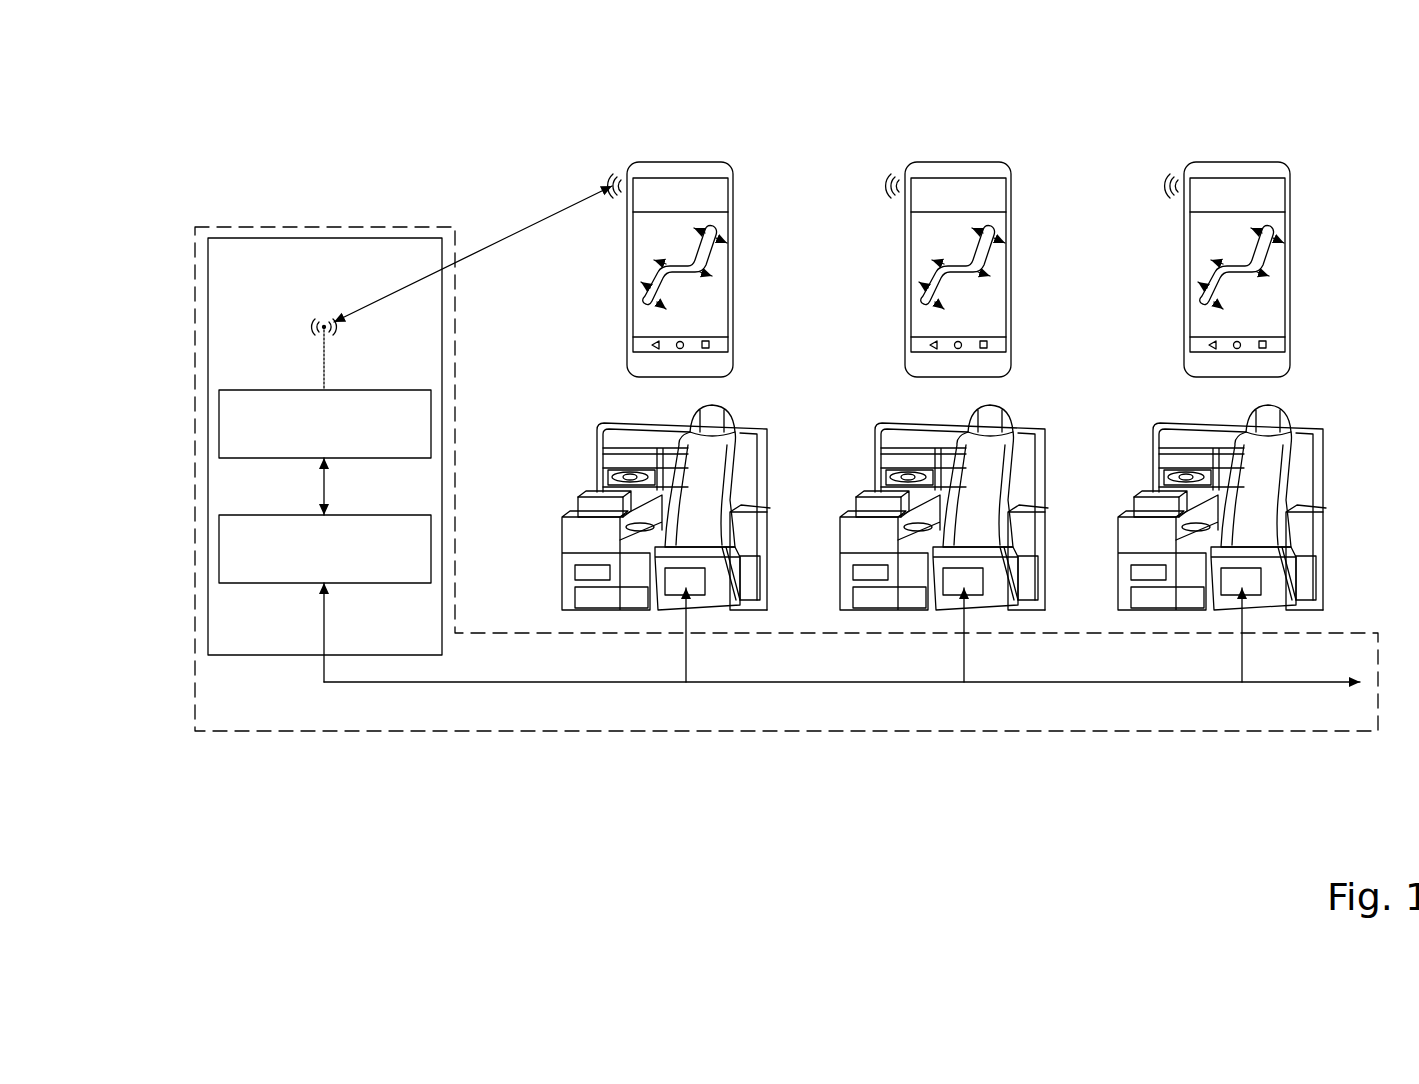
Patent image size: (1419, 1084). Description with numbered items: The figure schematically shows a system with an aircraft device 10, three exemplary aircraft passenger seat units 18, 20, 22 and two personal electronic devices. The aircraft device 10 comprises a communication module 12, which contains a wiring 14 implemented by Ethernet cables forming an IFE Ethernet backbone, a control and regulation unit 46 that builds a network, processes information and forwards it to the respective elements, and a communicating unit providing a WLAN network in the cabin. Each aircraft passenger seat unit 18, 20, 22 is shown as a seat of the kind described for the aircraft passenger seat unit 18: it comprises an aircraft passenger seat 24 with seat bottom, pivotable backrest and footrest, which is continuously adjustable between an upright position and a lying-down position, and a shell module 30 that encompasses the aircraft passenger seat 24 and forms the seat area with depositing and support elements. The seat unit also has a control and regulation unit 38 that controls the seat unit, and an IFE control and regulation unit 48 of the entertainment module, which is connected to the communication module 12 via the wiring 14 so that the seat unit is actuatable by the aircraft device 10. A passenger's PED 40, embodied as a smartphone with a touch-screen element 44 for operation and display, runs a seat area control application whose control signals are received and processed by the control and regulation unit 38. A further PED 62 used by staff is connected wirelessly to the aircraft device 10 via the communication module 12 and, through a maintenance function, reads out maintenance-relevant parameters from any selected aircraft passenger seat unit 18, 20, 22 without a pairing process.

The aircraft device 10 is at (220, 176).
The communication module 12 is at (338, 226).
The wiring 14 is at (232, 385).
The control and regulation unit 46 is at (219, 555).
The PED 40 is at (640, 226).
The further PED 62 is at (990, 175).
The touch-screen element 44 is at (668, 243).
The aircraft passenger seat unit 18 is at (645, 589).
The aircraft passenger seat unit 20 is at (908, 636).
The aircraft passenger seat unit 22 is at (1186, 636).
The aircraft passenger seat 24 is at (735, 438).
The shell module 30 is at (635, 438).
The control and regulation unit 38 is at (575, 572).
The IFE control and regulation unit 48 is at (695, 594).